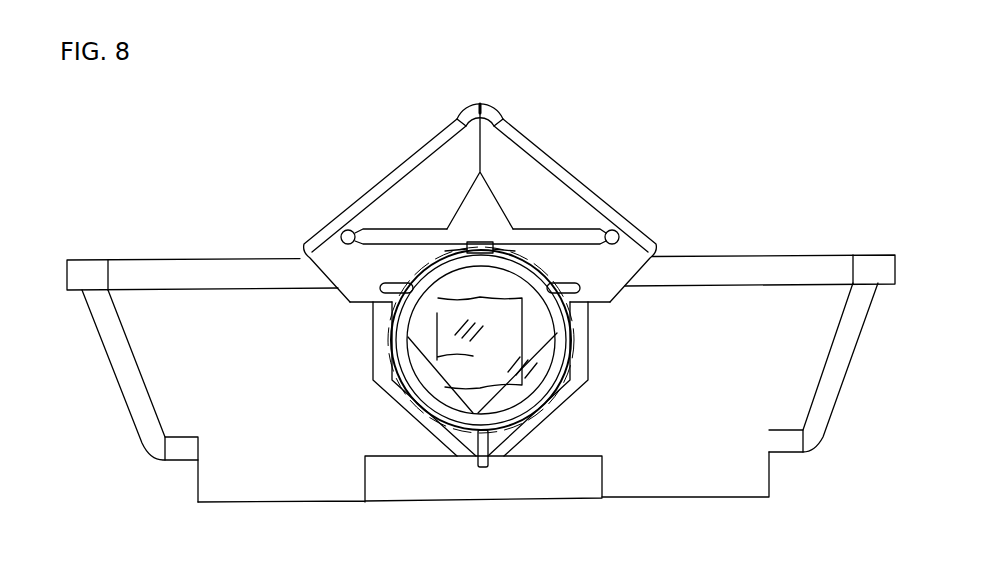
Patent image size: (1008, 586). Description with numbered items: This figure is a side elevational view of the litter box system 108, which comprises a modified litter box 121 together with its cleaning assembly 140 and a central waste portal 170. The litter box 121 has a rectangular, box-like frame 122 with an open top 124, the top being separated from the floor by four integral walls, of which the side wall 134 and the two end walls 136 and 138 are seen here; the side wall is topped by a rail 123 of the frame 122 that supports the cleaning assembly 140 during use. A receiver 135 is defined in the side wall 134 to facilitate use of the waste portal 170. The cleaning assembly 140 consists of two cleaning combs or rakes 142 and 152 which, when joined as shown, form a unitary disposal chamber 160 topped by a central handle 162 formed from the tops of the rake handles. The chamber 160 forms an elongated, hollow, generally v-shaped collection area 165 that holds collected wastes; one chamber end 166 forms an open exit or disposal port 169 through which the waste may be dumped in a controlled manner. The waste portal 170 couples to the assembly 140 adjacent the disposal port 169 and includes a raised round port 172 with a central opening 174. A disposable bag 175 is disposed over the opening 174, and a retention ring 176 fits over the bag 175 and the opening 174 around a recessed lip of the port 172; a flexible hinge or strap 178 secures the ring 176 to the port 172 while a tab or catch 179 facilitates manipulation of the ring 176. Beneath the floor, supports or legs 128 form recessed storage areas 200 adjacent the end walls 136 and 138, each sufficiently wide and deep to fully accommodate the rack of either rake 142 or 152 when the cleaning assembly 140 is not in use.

The system 108 is at (278, 131).
The litter box 121 is at (748, 236).
The frame 122 is at (805, 267).
The rails 123 is at (157, 258).
The open top 124 is at (122, 255).
The feet 128 is at (215, 490).
The side wall 134 is at (180, 382).
The receiver 135 is at (373, 387).
The end wall 136 is at (857, 352).
The end wall 138 is at (100, 338).
The cleaning assembly 140 is at (496, 151).
The rake 142 is at (554, 169).
The rake 152 is at (379, 147).
The disposal chamber 160 is at (488, 89).
The central handle 162 is at (465, 110).
The collection area 165 is at (398, 383).
The chamber end 166 is at (387, 342).
The disposal port 169 is at (413, 405).
The waste portal 170 is at (484, 360).
The raised round port 172 is at (572, 330).
The central opening 174 is at (572, 360).
The disposable bag 175 is at (437, 313).
The retention ring 176 is at (590, 304).
The flexible hinge 178 is at (490, 432).
The tab 179 is at (481, 243).
The storage area 200 is at (781, 477).